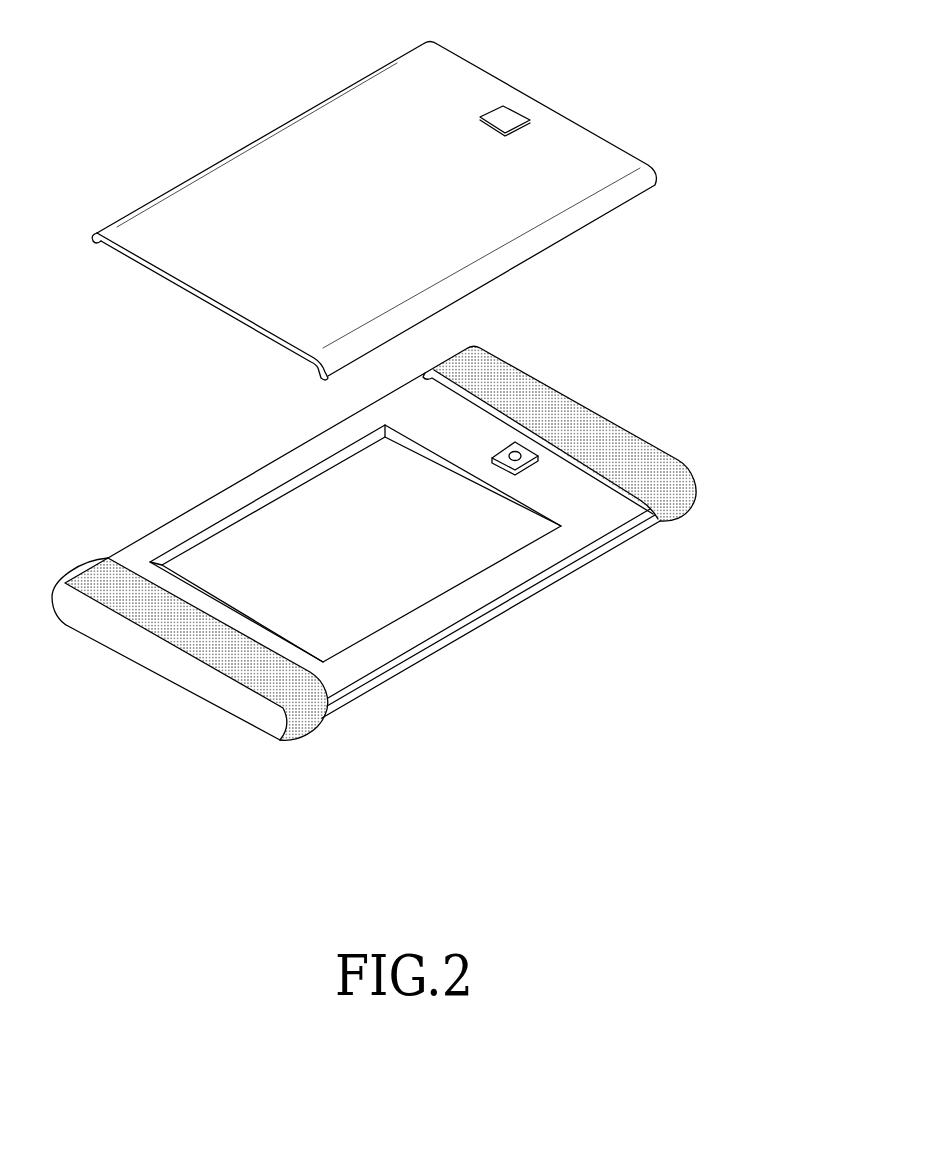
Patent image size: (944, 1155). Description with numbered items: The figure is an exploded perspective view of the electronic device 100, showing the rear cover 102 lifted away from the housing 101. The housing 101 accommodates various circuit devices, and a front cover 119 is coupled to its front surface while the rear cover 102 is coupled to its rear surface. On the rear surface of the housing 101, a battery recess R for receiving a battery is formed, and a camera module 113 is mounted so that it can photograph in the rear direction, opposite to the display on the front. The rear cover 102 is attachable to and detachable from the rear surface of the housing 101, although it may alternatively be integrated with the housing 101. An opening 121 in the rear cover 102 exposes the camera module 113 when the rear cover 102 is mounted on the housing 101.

The electronic device 100 is at (762, 215).
The housing 101 is at (690, 449).
The rear cover 102 is at (621, 122).
The camera module 113 is at (528, 456).
The front cover 119 is at (533, 595).
The opening 121 is at (508, 118).
The battery recess R is at (400, 584).